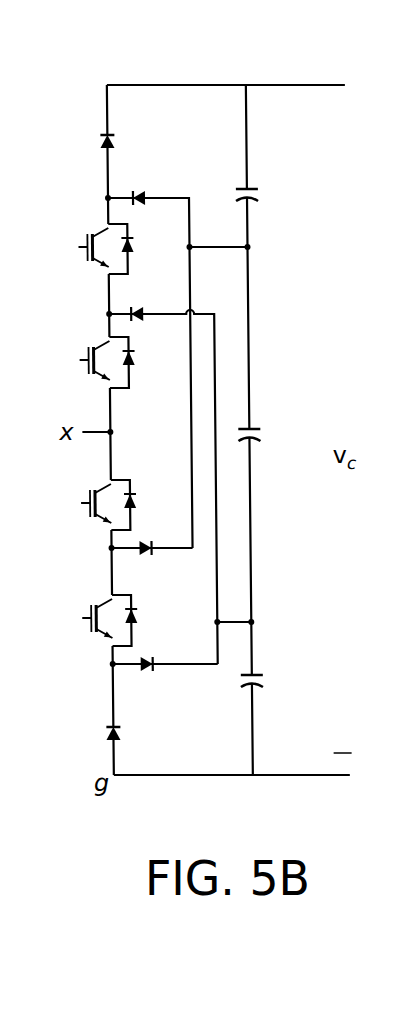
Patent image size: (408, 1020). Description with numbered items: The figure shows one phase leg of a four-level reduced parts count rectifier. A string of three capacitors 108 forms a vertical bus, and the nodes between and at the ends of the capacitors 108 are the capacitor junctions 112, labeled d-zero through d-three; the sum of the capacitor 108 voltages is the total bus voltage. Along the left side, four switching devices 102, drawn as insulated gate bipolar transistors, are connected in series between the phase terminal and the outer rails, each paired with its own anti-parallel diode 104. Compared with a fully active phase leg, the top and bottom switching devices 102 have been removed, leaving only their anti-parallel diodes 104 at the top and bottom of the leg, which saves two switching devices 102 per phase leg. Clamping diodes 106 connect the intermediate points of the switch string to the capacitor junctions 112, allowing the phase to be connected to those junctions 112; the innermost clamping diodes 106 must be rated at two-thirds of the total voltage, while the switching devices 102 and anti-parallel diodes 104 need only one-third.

The switching device 102 is at (78, 257).
The anti-parallel diode 104 is at (99, 140).
The clamping diode 106 is at (146, 305).
The capacitor 108 is at (258, 196).
The capacitor junction 112 is at (246, 82).